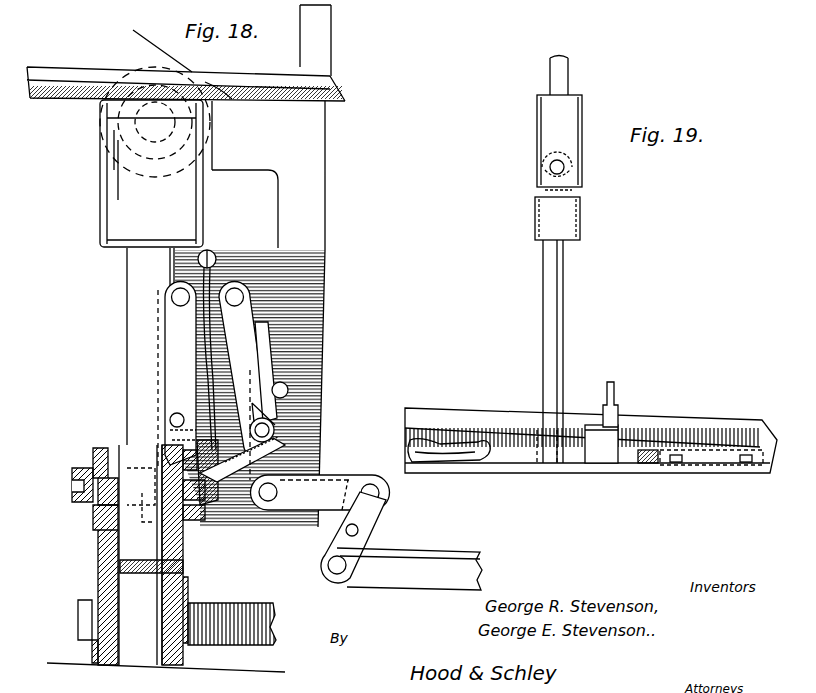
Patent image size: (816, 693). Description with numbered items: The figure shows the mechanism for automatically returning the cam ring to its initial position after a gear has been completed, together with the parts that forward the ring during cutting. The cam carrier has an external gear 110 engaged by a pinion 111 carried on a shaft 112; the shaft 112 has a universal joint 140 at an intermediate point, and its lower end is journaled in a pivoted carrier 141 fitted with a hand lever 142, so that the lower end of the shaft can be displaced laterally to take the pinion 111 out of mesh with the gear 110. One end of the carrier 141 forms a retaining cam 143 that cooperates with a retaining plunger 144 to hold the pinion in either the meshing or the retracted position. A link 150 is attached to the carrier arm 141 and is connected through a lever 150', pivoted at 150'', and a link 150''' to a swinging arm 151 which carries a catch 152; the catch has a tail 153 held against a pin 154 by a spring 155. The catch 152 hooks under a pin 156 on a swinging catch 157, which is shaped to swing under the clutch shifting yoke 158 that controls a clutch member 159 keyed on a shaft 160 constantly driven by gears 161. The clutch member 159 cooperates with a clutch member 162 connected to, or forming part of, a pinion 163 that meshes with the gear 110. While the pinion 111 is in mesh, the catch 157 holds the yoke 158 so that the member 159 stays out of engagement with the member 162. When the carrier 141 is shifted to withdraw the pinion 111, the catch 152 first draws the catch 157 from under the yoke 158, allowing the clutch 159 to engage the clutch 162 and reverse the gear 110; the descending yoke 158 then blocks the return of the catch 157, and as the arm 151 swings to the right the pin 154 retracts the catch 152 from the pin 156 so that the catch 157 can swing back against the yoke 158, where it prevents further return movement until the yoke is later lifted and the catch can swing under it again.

In FIG. 18, the external gear 110 is at (248, 608).
In FIG. 19, the external gear 110 is at (653, 438).
In FIG. 19, the pinion 111 is at (537, 433).
In FIG. 19, the shaft 112 is at (563, 332).
In FIG. 19, the universal joint 140 is at (582, 183).
In FIG. 19, the pivoted carrier 141 is at (602, 457).
In FIG. 19, the hand lever 142 is at (472, 454).
In FIG. 19, the retaining cam 143 is at (632, 458).
In FIG. 19, the retaining plunger 144 is at (658, 463).
In FIG. 18, the link 150 is at (409, 557).
In FIG. 19, the link 150 is at (631, 395).
In FIG. 18, the lever 150' is at (367, 531).
In FIG. 18, the pivot 150'' is at (389, 539).
In FIG. 18, the link 150''' is at (320, 481).
In FIG. 18, the swinging arm 151 is at (232, 287).
In FIG. 18, the catch 152 is at (240, 490).
In FIG. 18, the tail 153 is at (280, 350).
In FIG. 18, the pin 154 is at (288, 390).
In FIG. 18, the spring 155 is at (267, 410).
In FIG. 18, the pin 156 is at (172, 418).
In FIG. 18, the swinging catch 157 is at (178, 328).
In FIG. 18, the clutch shifting yoke 158 is at (76, 470).
In FIG. 18, the clutch member 159 is at (108, 446).
In FIG. 18, the shaft 160 is at (127, 330).
In FIG. 18, the gears 161 is at (95, 115).
In FIG. 18, the clutch member 162 is at (97, 543).
In FIG. 18, the pinion 163 is at (82, 615).